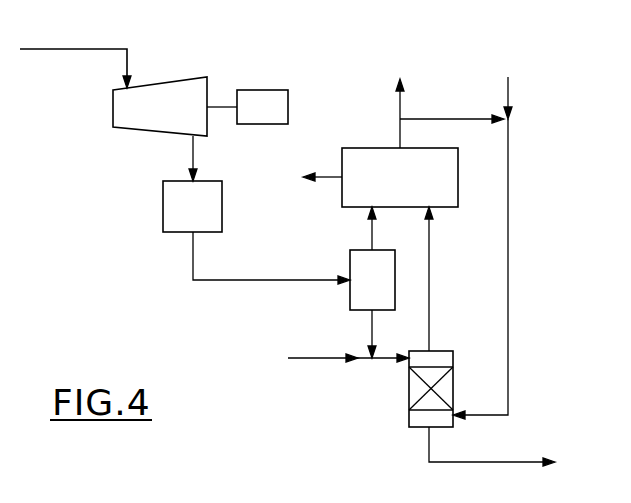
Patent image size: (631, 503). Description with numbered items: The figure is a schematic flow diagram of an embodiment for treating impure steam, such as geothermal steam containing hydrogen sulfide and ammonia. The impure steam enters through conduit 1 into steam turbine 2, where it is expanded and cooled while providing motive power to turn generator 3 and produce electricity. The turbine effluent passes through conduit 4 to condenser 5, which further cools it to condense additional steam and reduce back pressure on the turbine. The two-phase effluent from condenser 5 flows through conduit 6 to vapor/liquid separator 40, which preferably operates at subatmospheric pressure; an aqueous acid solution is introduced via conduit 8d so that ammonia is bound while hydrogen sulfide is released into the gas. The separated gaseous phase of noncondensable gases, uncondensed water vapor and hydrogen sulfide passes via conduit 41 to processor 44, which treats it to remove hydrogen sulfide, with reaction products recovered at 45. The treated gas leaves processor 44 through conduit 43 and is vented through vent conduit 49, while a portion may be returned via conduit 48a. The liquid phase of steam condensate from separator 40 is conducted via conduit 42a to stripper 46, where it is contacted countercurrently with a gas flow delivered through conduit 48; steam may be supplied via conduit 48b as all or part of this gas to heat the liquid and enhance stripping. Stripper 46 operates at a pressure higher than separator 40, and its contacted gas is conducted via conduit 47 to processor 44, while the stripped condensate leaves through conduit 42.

The conduit 1 is at (57, 46).
The steam turbine 2 is at (152, 82).
The generator 3 is at (250, 88).
The conduit 4 is at (196, 158).
The condenser 5 is at (222, 210).
The conduit 6 is at (288, 277).
The acid solution conduit 8d is at (323, 362).
The vapor/liquid separator 40 is at (348, 297).
The conduit 41 is at (375, 235).
The conduit 42 is at (468, 458).
The conduit 42a is at (377, 332).
The conduit 43 is at (413, 128).
The processor 44 is at (458, 180).
The reaction products recovery 45 is at (334, 174).
The stripper 46 is at (453, 380).
The conduit 47 is at (433, 272).
The conduit 48 is at (510, 297).
The conduit 48a is at (430, 115).
The conduit 48b is at (509, 95).
The vent conduit 49 is at (403, 103).